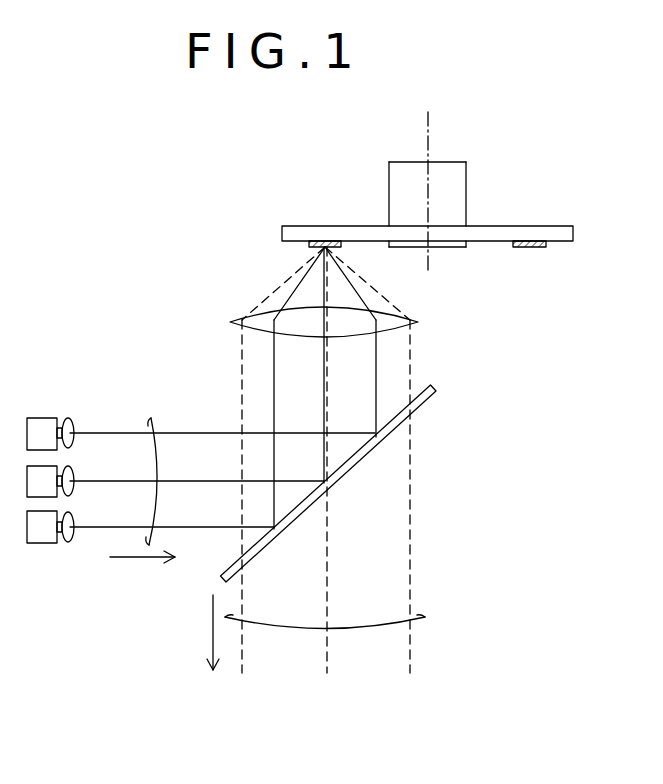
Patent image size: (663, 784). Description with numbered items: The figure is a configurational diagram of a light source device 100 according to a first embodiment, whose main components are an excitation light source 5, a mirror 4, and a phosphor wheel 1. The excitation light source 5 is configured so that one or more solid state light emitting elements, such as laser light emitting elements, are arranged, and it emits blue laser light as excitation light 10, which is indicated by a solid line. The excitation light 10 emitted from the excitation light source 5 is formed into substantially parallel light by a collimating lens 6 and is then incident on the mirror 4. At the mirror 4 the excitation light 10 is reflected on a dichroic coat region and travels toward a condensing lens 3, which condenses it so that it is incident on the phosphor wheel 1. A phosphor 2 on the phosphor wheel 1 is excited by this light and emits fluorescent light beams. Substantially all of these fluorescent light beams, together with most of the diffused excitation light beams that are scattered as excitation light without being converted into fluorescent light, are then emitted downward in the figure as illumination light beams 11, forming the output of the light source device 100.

The light source device 100 is at (105, 193).
The phosphor wheel 1 is at (352, 226).
The phosphor 2 is at (318, 247).
The condensing lens 3 is at (418, 322).
The mirror 4 is at (363, 458).
The excitation light source 5 is at (41, 418).
The collimating lens 6 is at (68, 418).
The excitation light 10 is at (154, 466).
The illumination light beams 11 is at (347, 618).